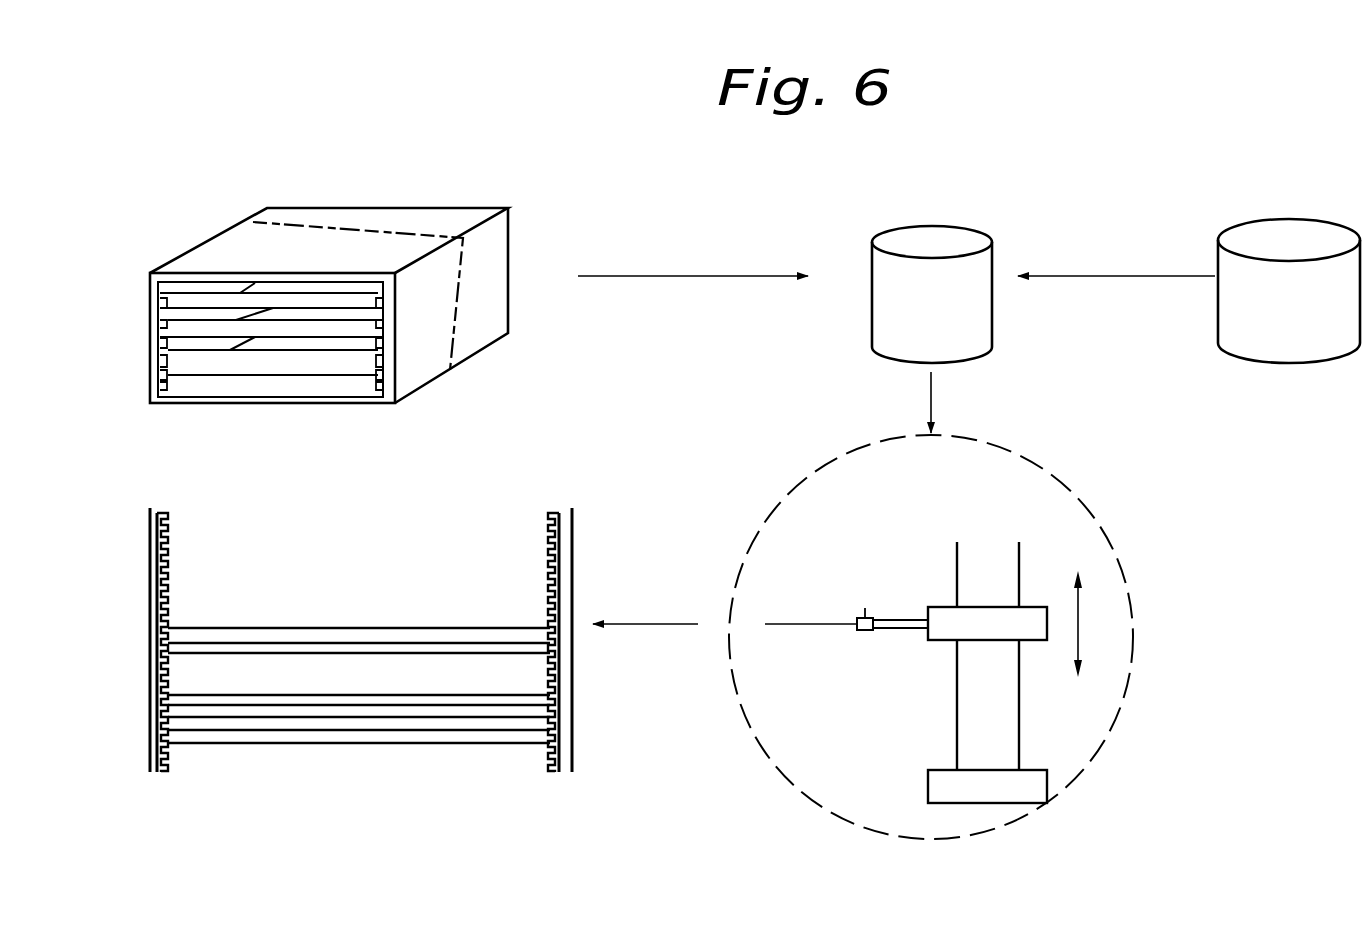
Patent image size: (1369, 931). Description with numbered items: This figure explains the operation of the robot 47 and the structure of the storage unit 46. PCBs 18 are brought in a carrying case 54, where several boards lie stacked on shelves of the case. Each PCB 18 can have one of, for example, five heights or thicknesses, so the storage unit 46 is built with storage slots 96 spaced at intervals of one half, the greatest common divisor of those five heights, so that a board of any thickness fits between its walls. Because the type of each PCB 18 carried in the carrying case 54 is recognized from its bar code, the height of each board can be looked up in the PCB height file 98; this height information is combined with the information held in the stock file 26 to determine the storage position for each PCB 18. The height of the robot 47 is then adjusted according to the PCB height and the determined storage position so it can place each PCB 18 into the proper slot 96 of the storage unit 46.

The carrying case 54 is at (446, 212).
The PCB 18 is at (366, 300).
The storage unit 46 is at (575, 517).
The rack comb slots 96 is at (552, 542).
The stock file 26 is at (992, 333).
The PCB height file 98 is at (1288, 363).
The robot 47 is at (1087, 511).